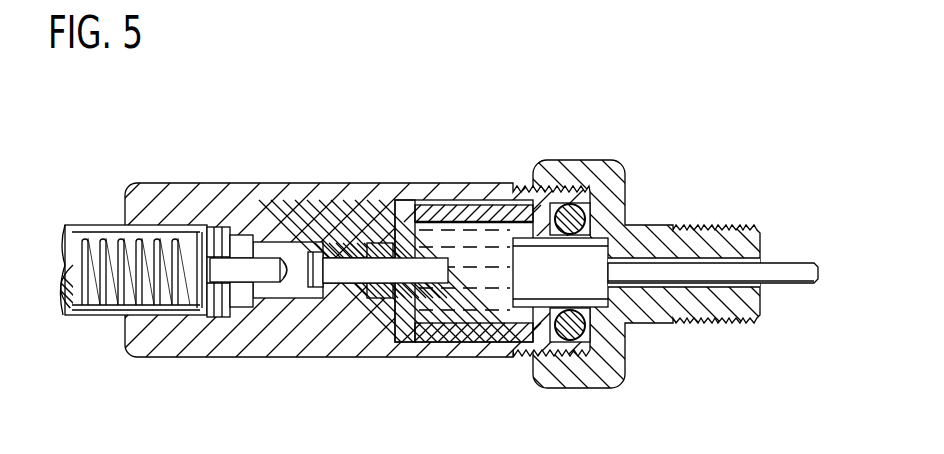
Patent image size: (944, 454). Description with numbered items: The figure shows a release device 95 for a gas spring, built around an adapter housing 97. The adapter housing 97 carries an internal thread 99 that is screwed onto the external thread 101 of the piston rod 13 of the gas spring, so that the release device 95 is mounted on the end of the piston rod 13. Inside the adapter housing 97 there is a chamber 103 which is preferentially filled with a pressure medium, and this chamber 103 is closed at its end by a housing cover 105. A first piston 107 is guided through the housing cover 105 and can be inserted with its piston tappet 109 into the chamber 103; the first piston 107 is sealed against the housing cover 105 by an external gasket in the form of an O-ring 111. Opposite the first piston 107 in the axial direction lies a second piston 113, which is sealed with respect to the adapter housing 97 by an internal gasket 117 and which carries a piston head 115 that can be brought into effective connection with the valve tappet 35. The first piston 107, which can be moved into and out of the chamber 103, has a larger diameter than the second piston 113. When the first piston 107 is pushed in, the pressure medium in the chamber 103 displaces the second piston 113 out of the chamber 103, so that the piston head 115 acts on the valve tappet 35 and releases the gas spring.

The release device 95 is at (567, 118).
The adapter housing 97 is at (267, 193).
The internal thread 99 is at (213, 320).
The external thread 101 is at (84, 224).
The piston rod 13 is at (150, 233).
The valve tappet 35 is at (243, 305).
The chamber 103 is at (470, 300).
The housing cover 105 is at (590, 373).
The first piston 107 is at (590, 253).
The piston tappet 109 is at (803, 277).
The O-ring 111 is at (600, 330).
The second piston 113 is at (387, 268).
The piston head 115 is at (317, 260).
The internal gasket 117 is at (378, 300).